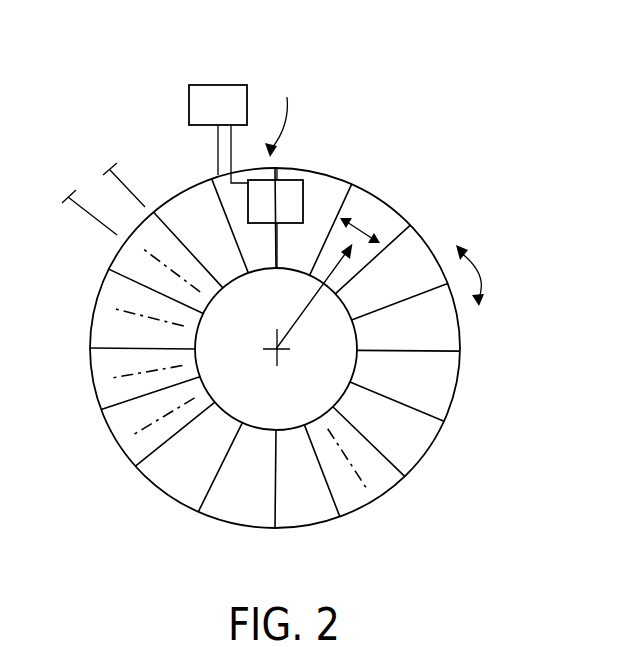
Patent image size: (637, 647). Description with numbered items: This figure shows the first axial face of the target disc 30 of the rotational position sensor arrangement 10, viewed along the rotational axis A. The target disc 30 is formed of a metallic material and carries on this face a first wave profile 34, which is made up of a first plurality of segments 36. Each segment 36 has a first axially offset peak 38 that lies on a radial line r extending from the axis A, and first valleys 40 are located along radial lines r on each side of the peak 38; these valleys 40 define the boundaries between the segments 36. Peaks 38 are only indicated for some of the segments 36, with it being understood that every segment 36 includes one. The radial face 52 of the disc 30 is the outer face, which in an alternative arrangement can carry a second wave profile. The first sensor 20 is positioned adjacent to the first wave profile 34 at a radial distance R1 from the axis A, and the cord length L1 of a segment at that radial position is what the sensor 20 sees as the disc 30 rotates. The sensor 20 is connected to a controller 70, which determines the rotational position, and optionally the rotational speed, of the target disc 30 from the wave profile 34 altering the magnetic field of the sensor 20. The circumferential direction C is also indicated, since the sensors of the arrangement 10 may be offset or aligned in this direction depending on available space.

The rotational position sensor arrangement 10 is at (388, 86).
The first sensor 20 is at (295, 197).
The target disc 30 is at (456, 393).
The first wave profile 34 is at (234, 482).
The first plurality of segments 36 is at (177, 438).
The first axially offset peak 38 is at (176, 241).
The first valleys 40 is at (167, 225).
The radial face 52 is at (281, 112).
The controller 70 is at (230, 92).
The cord length L1 is at (365, 227).
The radial distance R1 is at (307, 308).
The rotational axis A is at (278, 356).
The circumferential direction C is at (477, 273).
The radial line r is at (110, 168).